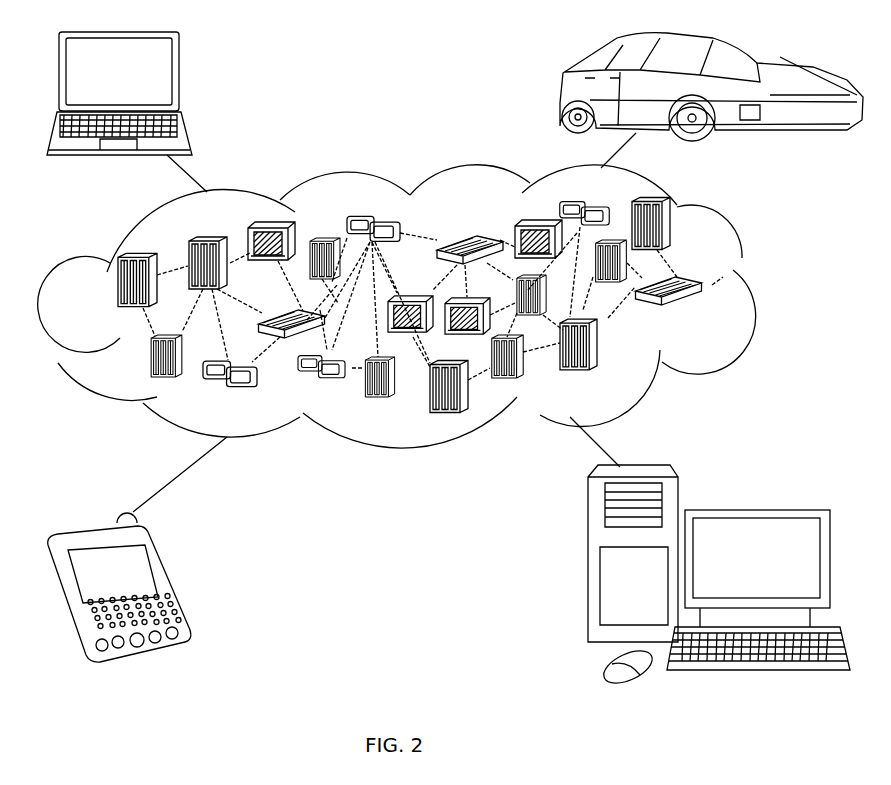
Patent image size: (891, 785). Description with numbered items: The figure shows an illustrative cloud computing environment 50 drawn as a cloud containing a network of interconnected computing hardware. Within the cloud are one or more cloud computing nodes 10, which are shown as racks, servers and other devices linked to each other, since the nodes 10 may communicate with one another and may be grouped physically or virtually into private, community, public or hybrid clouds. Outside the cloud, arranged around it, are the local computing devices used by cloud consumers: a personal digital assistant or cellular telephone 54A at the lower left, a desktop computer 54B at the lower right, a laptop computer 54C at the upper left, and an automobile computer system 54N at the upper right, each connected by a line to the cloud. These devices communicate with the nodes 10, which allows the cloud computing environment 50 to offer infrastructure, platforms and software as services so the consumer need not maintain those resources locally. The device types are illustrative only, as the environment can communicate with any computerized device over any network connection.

The cloud computing environment 50 is at (757, 290).
The cloud computing node 10 is at (703, 313).
The personal digital assistant or cellular telephone 54A is at (168, 583).
The desktop computer 54B is at (752, 510).
The laptop computer 54C is at (178, 80).
The automobile computer system 54N is at (562, 93).